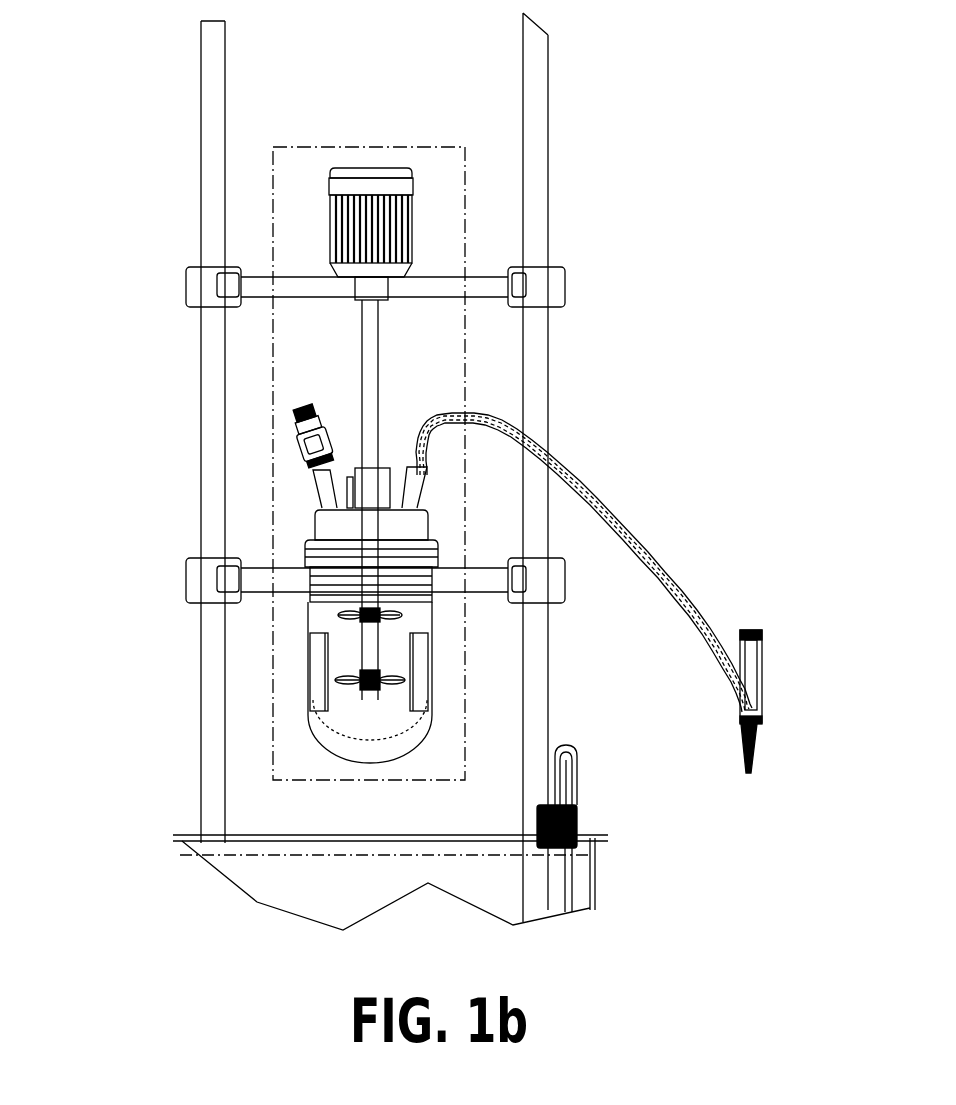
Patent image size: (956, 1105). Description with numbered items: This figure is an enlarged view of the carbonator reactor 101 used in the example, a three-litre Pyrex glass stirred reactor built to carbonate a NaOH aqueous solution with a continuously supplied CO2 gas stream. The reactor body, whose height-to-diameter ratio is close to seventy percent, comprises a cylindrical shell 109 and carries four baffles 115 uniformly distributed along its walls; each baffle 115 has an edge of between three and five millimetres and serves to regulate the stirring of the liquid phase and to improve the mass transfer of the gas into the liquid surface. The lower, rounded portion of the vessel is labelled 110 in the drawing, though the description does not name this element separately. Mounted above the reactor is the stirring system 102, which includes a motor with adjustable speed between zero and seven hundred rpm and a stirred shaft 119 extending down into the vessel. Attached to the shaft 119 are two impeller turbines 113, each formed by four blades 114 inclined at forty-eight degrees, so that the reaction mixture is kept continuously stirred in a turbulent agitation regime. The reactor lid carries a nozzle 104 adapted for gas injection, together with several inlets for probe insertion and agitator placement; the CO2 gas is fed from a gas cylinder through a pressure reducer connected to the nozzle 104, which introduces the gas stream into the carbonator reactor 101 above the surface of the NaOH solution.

The carbonator reactor 101 is at (612, 288).
The stirring system 102 is at (465, 185).
The nozzle 104 is at (313, 463).
The cylindrical shell 109 is at (417, 612).
The reaction vessel 110 is at (400, 737).
The impeller turbine 113 is at (360, 693).
The blade 114 is at (345, 690).
The baffle 115 is at (320, 648).
The stirred shaft 119 is at (358, 383).